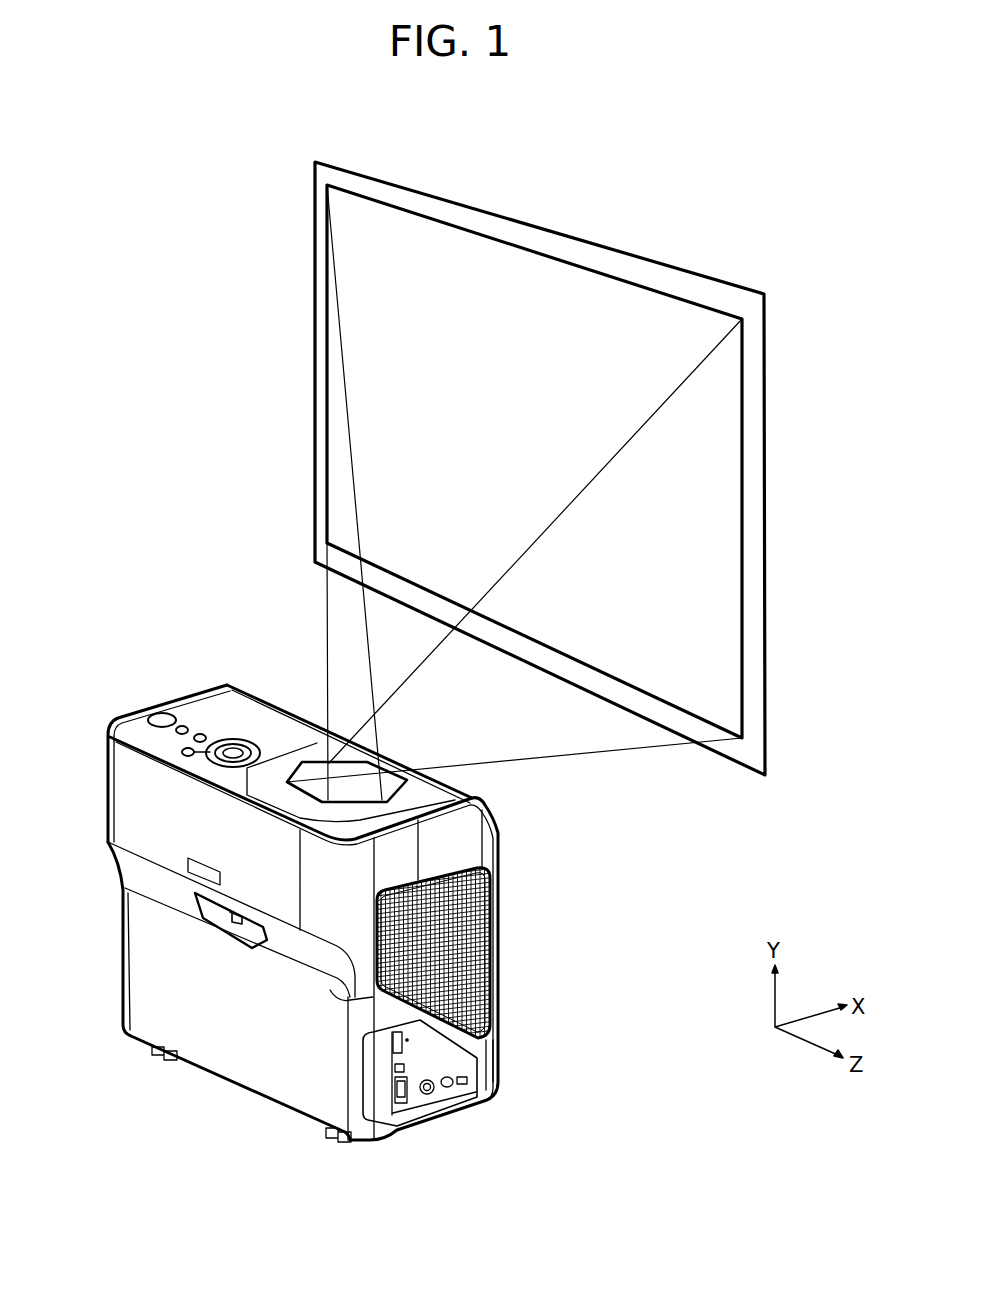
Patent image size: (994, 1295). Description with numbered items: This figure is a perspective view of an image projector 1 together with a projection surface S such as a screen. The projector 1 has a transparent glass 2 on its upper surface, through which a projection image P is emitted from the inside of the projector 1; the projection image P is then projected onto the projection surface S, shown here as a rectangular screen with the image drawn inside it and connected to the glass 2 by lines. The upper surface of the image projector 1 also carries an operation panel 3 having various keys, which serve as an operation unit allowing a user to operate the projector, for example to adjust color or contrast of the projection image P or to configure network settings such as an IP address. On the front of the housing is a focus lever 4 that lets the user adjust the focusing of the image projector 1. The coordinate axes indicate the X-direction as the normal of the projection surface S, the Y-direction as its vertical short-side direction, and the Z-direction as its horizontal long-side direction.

The image projector 1 is at (136, 948).
The transparent glass 2 is at (397, 782).
The operation panel 3 is at (200, 708).
The focus lever 4 is at (237, 925).
The projection surface S is at (760, 402).
The projection image P is at (724, 539).